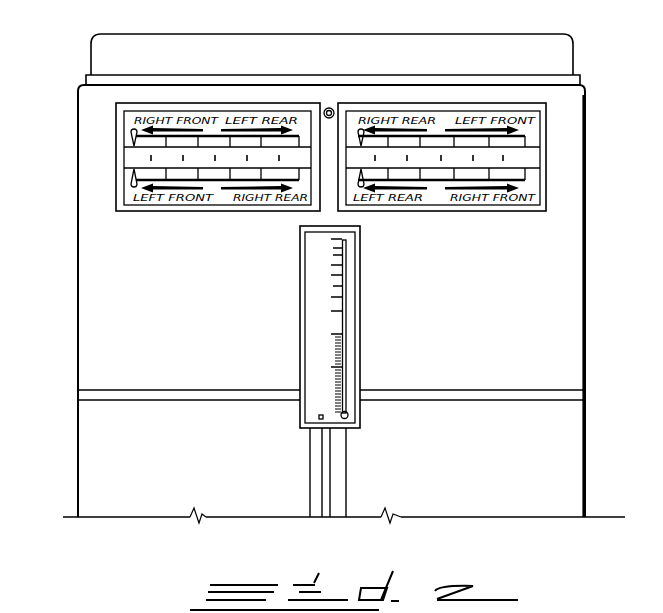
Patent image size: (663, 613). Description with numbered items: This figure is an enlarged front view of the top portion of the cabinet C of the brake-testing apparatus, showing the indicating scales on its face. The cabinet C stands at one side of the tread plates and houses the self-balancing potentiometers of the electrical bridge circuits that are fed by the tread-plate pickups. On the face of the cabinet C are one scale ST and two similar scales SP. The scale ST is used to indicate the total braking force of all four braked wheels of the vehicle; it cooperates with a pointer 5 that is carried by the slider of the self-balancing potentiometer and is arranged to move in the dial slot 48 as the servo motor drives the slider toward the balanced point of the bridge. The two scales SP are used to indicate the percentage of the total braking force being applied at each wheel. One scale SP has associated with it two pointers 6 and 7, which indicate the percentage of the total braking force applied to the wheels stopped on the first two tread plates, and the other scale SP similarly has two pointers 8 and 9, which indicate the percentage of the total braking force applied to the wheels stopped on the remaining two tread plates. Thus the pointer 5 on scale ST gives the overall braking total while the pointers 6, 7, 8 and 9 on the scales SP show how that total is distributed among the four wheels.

The cabinet C is at (584, 307).
The scale SP is at (126, 152).
The pointer 7 is at (128, 131).
The pointer 6 is at (128, 181).
The pointer 9 is at (358, 130).
The pointer 8 is at (352, 186).
The scale ST is at (308, 320).
The dial slot 48 is at (344, 347).
The pointer 5 is at (322, 414).